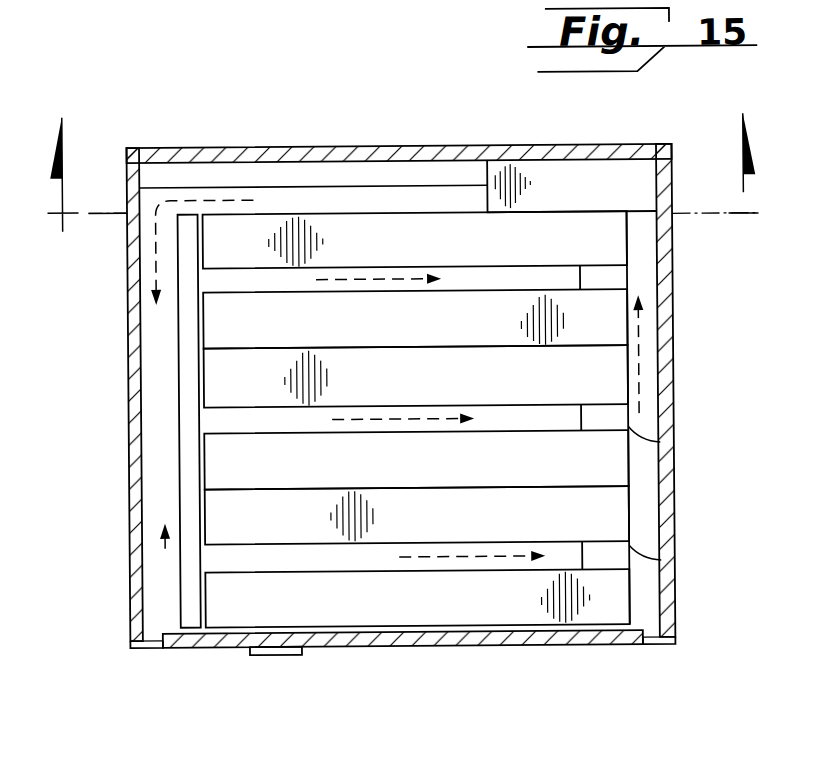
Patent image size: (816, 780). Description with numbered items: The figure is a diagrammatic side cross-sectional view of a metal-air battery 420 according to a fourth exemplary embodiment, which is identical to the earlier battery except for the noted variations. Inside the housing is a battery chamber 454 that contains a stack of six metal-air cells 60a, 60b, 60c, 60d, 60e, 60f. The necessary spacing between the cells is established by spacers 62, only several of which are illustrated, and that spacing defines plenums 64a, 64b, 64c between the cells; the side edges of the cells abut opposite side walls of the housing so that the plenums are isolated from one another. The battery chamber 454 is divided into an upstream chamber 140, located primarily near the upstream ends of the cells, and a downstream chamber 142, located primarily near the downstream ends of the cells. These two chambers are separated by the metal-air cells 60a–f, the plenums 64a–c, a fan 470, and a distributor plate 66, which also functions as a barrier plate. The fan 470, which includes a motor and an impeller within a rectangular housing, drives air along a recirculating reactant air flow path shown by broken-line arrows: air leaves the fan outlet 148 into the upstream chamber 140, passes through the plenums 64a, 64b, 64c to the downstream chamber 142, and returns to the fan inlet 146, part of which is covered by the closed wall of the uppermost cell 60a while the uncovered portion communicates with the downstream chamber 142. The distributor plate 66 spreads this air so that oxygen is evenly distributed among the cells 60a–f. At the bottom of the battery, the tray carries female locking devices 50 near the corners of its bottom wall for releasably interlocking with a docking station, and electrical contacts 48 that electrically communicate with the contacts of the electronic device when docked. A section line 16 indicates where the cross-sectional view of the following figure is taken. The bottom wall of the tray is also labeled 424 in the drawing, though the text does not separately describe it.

The metal-air battery 420 is at (320, 110).
The outlet 148 is at (478, 201).
The fan 470 is at (553, 198).
The metal-air cell 60a is at (405, 252).
The metal-air cell 60b is at (455, 323).
The metal-air cell 60c is at (415, 388).
The metal-air cell 60d is at (417, 470).
The metal-air cell 60e is at (422, 527).
The metal-air cell 60f is at (467, 612).
The inlet 146 is at (641, 223).
The battery chamber 454 is at (650, 262).
The spacer 62 is at (642, 304).
The plenum 64a is at (214, 281).
The plenum 64b is at (214, 419).
The plenum 64c is at (358, 556).
The distributor plate 66 is at (178, 357).
The downstream chamber 142 is at (650, 588).
The upstream chamber 140 is at (162, 584).
The female locking device 50 is at (150, 648).
The electrical contact 48 is at (274, 656).
The bottom wall 424 is at (548, 651).
The section line 16 is at (403, 189).